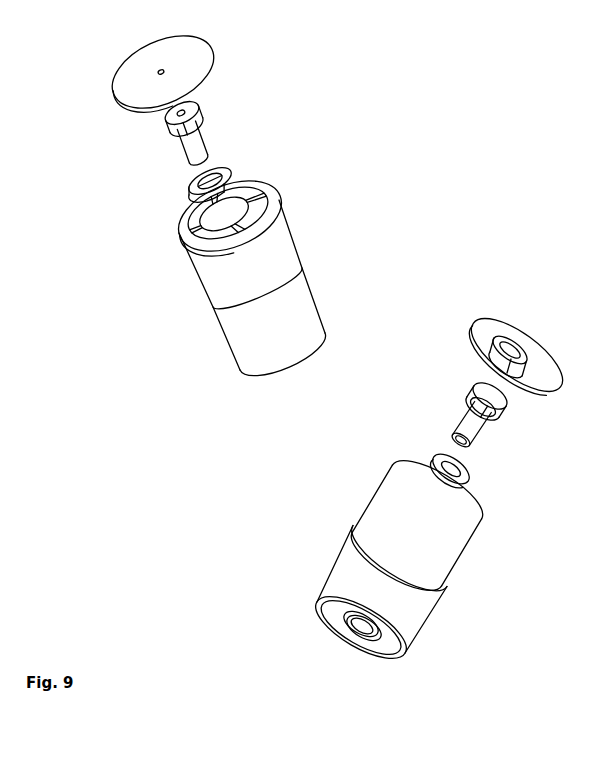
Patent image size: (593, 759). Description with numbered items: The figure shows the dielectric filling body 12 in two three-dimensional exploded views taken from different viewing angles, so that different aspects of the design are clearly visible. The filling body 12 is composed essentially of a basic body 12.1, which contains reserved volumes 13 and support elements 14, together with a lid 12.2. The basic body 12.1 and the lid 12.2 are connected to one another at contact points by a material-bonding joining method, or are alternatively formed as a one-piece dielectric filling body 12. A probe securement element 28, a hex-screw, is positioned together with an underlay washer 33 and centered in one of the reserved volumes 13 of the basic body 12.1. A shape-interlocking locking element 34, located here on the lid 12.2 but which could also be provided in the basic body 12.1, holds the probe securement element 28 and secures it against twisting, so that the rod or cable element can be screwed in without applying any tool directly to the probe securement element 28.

The dielectric filling body 12 is at (294, 418).
The basic body 12.1 is at (370, 577).
The lid 12.2 is at (488, 338).
The reserved volumes 13 is at (195, 219).
The support elements 14 is at (240, 232).
The probe securement element 28 is at (485, 390).
The underlay washer 33 is at (433, 462).
The locking element 34 is at (513, 378).